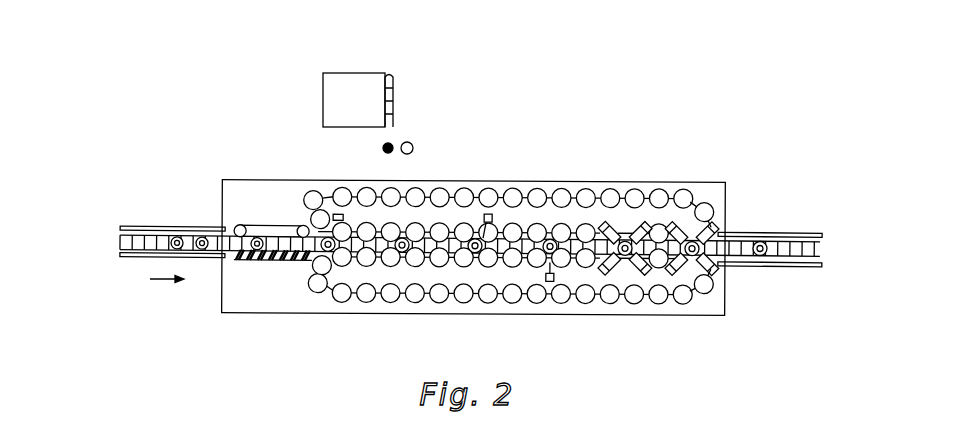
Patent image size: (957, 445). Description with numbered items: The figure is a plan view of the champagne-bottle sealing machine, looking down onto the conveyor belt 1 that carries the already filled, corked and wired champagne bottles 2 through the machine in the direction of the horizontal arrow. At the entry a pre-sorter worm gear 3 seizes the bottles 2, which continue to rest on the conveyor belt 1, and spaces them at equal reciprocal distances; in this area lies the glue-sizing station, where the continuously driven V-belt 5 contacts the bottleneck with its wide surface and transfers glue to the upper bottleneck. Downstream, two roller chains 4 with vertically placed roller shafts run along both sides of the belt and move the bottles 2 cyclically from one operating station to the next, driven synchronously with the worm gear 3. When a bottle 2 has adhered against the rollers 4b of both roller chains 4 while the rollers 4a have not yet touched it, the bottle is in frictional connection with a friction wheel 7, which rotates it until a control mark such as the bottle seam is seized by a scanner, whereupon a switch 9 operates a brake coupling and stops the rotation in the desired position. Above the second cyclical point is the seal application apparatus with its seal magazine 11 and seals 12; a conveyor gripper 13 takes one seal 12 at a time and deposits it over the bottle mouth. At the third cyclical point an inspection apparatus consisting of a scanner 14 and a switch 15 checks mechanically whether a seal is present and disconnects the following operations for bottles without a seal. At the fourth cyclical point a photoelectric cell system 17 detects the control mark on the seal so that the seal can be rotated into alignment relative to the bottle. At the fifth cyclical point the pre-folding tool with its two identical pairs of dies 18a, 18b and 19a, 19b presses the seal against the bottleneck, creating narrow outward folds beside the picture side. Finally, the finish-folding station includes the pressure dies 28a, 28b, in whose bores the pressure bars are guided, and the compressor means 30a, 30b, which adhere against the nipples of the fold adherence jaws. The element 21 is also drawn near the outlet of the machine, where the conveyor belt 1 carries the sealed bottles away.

The conveyor belt 1 is at (129, 237).
The champagne bottles 2 is at (177, 237).
The pre-sorter worm gear 3 is at (243, 260).
The roller chains 4 is at (397, 226).
The rollers 4a is at (314, 217).
The rollers 4b is at (332, 227).
The V-belt 5 is at (270, 259).
The friction wheel 7 is at (313, 227).
The switch 9 is at (340, 213).
The seal magazine 11 is at (362, 80).
The seals 12 is at (391, 143).
The conveyor gripper 13 is at (410, 143).
The scanner 14 is at (477, 214).
The switch 15 is at (493, 215).
The photoelectric cell system 17 is at (549, 284).
The die 18a is at (612, 234).
The die 18b is at (640, 264).
The die 19a is at (611, 264).
The die 19b is at (641, 234).
The link 21 is at (714, 216).
The pressure die 28a is at (679, 264).
The pressure die 28b is at (716, 234).
The compressor means 30a is at (680, 234).
The compressor means 30b is at (716, 264).